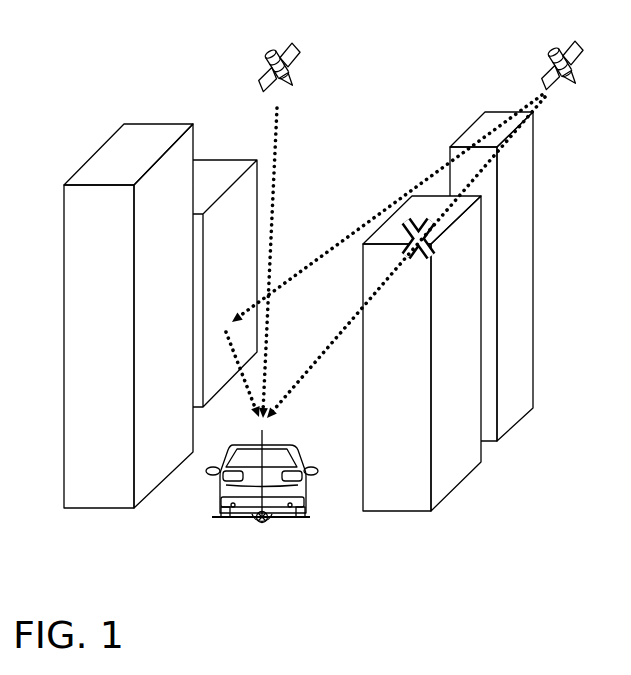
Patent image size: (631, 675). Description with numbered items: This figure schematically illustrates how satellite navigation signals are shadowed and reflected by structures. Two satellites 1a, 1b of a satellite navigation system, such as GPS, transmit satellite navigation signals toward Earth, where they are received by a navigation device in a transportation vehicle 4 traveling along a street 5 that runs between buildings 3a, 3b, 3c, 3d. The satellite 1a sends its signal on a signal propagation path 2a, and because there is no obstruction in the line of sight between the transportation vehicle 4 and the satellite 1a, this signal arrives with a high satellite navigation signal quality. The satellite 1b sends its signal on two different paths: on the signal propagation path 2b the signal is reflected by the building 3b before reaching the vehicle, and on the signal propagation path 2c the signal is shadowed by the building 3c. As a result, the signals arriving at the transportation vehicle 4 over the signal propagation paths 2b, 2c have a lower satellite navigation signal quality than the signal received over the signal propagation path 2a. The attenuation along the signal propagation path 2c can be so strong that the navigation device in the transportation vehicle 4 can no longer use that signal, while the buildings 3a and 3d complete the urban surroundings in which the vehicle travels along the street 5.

The satellite 1a is at (281, 52).
The satellite 1b is at (565, 50).
The signal propagation path 2a is at (279, 134).
The signal propagation path 2b is at (357, 231).
The signal propagation path 2c is at (321, 357).
The building 3a is at (100, 148).
The building 3b is at (222, 160).
The building 3c is at (450, 491).
The building 3d is at (511, 429).
The transportation vehicle 4 is at (298, 489).
The street 5 is at (158, 532).